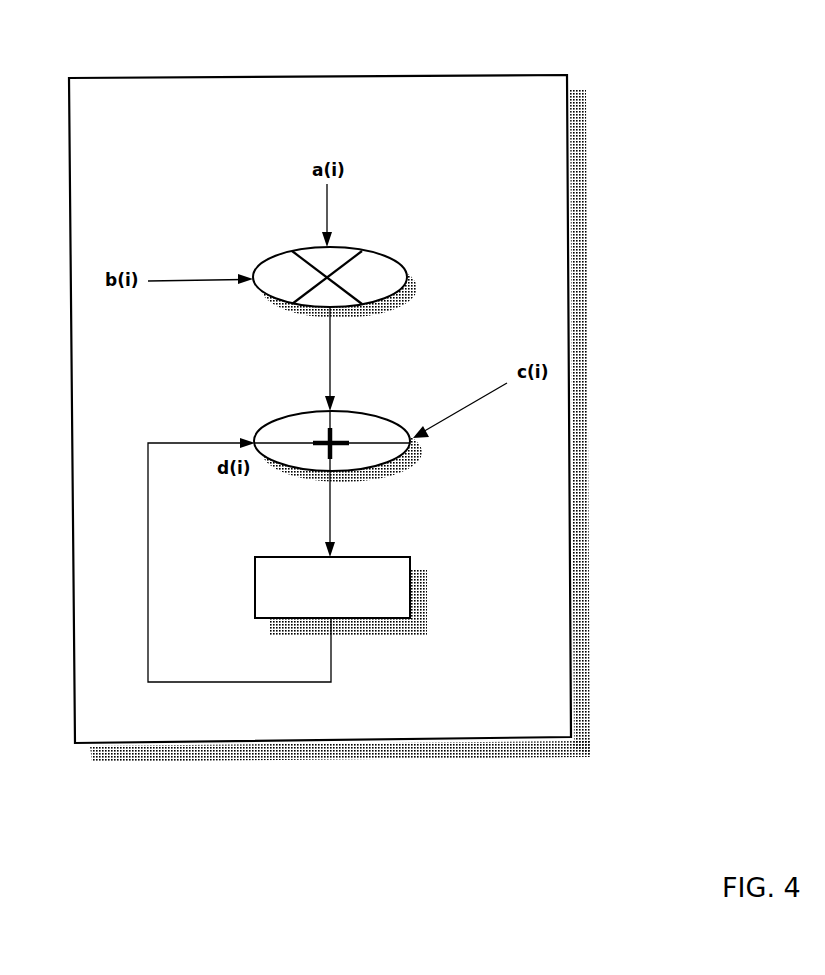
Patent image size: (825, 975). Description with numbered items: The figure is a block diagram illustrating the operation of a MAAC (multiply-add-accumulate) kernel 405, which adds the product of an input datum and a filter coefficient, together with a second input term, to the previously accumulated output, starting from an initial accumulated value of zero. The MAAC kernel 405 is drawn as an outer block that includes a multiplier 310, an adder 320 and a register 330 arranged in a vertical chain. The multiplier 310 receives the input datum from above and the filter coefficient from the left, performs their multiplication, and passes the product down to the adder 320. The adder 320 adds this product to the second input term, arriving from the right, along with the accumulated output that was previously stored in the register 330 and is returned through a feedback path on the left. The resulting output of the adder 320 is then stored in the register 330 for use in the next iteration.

The MAAC kernel 405 is at (394, 75).
The multiplier 310 is at (375, 248).
The adder 320 is at (367, 412).
The register 330 is at (383, 557).